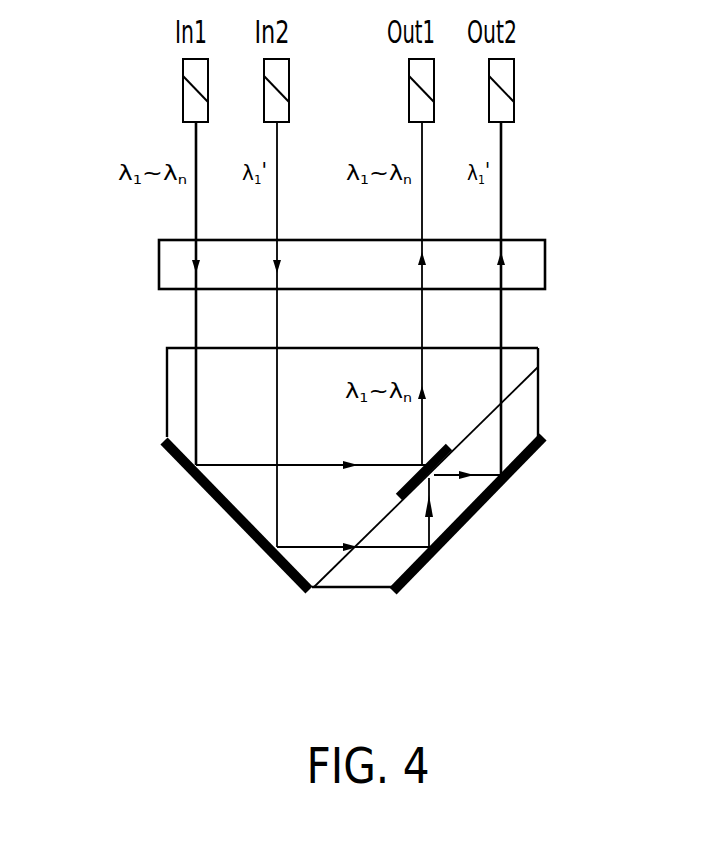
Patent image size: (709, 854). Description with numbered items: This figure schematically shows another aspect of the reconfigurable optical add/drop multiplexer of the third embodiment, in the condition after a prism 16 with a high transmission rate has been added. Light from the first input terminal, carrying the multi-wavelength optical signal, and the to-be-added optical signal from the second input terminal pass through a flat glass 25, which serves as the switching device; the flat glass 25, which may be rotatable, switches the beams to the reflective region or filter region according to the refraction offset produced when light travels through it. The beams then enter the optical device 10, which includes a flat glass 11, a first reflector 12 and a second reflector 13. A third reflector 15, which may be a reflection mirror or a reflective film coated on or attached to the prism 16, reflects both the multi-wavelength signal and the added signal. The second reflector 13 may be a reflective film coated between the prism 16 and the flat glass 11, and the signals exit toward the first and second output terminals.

The optical device 10 is at (495, 456).
The flat glass 11 is at (515, 443).
The first reflector 12 is at (498, 497).
The second reflector 13 is at (446, 442).
The third reflector 15 is at (218, 507).
The prism 16 is at (176, 392).
The flat glass 25 is at (166, 264).